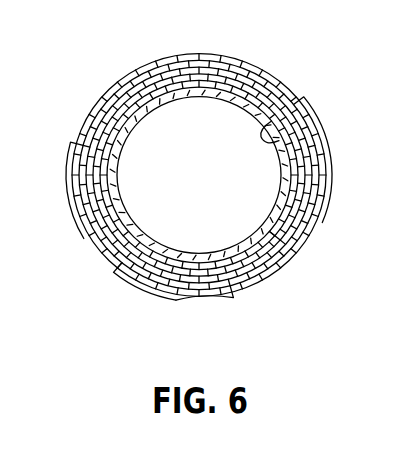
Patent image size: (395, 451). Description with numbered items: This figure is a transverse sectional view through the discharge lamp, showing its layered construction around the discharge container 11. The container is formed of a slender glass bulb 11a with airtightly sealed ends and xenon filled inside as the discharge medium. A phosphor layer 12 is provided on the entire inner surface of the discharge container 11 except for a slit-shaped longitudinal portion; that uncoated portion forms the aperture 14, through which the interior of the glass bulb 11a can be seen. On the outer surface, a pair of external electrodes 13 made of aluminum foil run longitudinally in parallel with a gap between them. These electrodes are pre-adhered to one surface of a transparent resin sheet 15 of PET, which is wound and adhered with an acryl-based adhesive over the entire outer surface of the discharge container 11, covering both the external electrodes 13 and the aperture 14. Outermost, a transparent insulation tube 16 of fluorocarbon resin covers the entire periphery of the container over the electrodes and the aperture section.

The discharge container 11 is at (296, 179).
The glass bulb 11a is at (250, 288).
The phosphor layer 12 is at (302, 122).
The external electrodes 13 is at (85, 150).
The aperture 14 is at (212, 98).
The transparent resin sheet 15 is at (231, 290).
The transparent insulation tube 16 is at (160, 290).